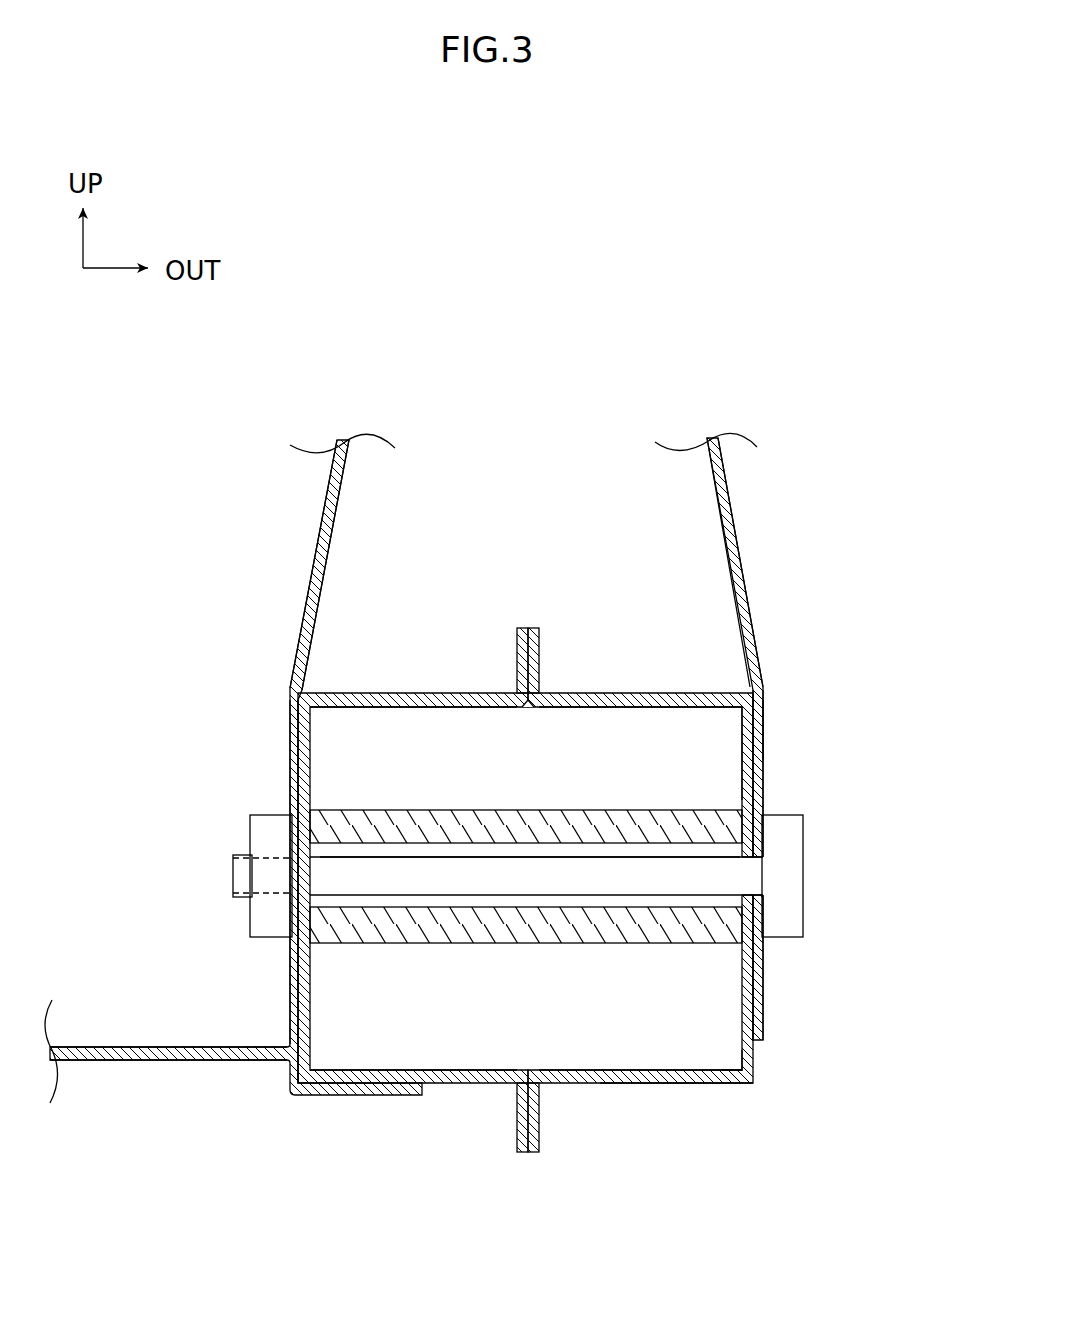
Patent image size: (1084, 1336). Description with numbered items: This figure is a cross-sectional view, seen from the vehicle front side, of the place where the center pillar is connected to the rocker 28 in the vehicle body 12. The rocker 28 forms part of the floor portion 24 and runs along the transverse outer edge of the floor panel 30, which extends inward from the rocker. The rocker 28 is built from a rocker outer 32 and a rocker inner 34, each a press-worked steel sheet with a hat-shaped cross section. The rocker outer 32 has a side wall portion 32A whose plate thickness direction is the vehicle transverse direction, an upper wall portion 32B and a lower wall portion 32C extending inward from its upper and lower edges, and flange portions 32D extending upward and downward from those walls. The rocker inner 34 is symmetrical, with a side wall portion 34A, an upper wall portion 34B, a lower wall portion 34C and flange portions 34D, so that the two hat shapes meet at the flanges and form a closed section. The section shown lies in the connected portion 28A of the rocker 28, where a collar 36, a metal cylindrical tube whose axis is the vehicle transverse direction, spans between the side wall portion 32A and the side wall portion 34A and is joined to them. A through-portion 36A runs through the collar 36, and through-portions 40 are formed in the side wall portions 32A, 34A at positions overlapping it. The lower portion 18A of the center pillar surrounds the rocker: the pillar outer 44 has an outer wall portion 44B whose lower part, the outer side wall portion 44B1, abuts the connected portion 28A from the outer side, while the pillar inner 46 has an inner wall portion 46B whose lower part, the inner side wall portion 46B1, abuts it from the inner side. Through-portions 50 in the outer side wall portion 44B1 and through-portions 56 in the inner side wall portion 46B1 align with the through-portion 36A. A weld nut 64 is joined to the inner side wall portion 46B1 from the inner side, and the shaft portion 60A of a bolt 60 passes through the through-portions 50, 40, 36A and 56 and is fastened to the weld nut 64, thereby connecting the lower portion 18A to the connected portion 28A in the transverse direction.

The vehicle body 12 is at (772, 360).
The lower portion 18A is at (764, 733).
The floor portion 24 is at (98, 856).
The rocker 28 is at (714, 1128).
The connected portion 28A is at (755, 1052).
The floor panel 30 is at (100, 1061).
The rocker outer 32 is at (592, 682).
The side wall portion 32A is at (742, 755).
The upper wall portion 32B is at (598, 707).
The lower wall portion 32C is at (628, 1070).
The flange portions 32D is at (540, 690).
The rocker inner 34 is at (440, 688).
The side wall portion 34A is at (312, 758).
The upper wall portion 34B is at (450, 707).
The lower wall portion 34C is at (412, 1070).
The flange portions 34D is at (517, 690).
The collar 36 is at (520, 806).
The through-portion 36A is at (569, 912).
The through-portions 40 is at (312, 862).
The pillar outer 44 is at (790, 503).
The outer wall portion 44B is at (744, 548).
The outer side wall portion 44B1 is at (764, 770).
The pillar inner 46 is at (282, 498).
The inner wall portion 46B is at (306, 538).
The inner side wall portion 46B1 is at (290, 1000).
The through-portions 50 is at (764, 868).
The through-portions 56 is at (290, 889).
The bolts 60 is at (808, 900).
The shaft portion 60A is at (462, 877).
The weld nuts 64 is at (263, 822).